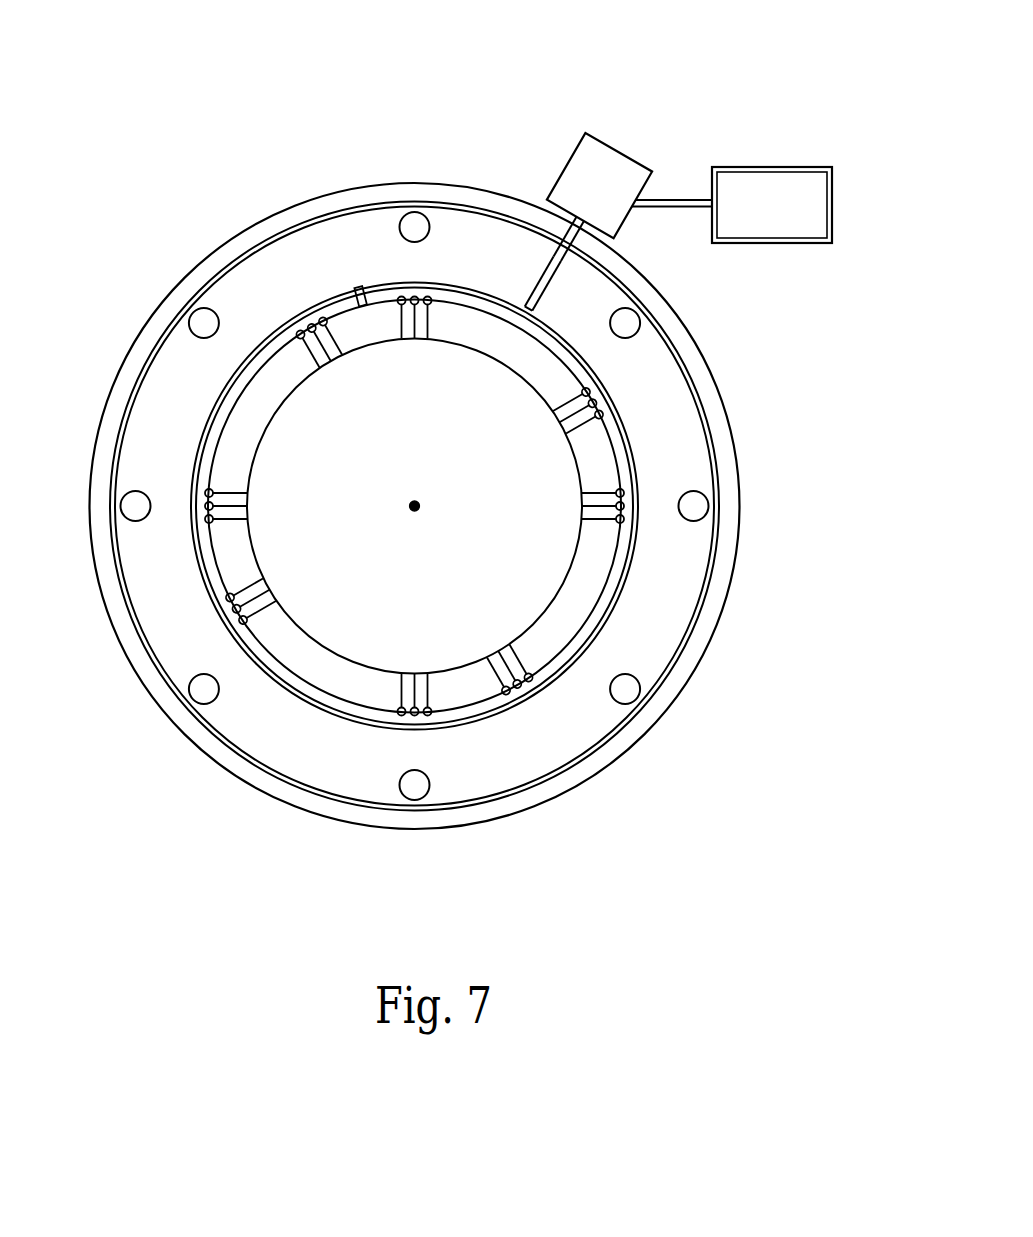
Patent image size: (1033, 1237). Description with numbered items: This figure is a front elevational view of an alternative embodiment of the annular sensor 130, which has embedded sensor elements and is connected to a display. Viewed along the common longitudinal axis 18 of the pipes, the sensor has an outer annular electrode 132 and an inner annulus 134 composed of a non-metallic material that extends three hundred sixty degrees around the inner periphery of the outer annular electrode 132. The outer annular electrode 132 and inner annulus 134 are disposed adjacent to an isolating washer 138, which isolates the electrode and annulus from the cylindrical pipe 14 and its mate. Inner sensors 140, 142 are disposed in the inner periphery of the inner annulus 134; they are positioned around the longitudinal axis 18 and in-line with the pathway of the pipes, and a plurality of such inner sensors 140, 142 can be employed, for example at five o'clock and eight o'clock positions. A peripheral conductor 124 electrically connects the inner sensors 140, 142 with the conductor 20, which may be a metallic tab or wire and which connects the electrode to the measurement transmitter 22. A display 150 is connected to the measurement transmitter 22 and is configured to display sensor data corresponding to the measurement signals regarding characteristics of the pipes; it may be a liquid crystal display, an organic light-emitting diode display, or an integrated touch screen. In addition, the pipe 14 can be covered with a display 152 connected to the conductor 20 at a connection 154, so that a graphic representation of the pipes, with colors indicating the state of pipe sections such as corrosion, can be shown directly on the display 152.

The annular sensor 130 is at (127, 94).
The display 152 is at (725, 458).
The pipe 14 is at (712, 575).
The isolating washer 138 is at (527, 760).
The outer annular electrode 132 is at (620, 603).
The inner annulus 134 is at (512, 353).
The inner sensor 142 is at (270, 593).
The inner sensor 140 is at (507, 660).
The peripheral conductor 124 is at (358, 290).
The longitudinal axis 18 is at (414, 502).
The conductor 20 is at (525, 298).
The connection 154 is at (573, 237).
The measurement transmitter 22 is at (567, 165).
The display 150 is at (777, 167).